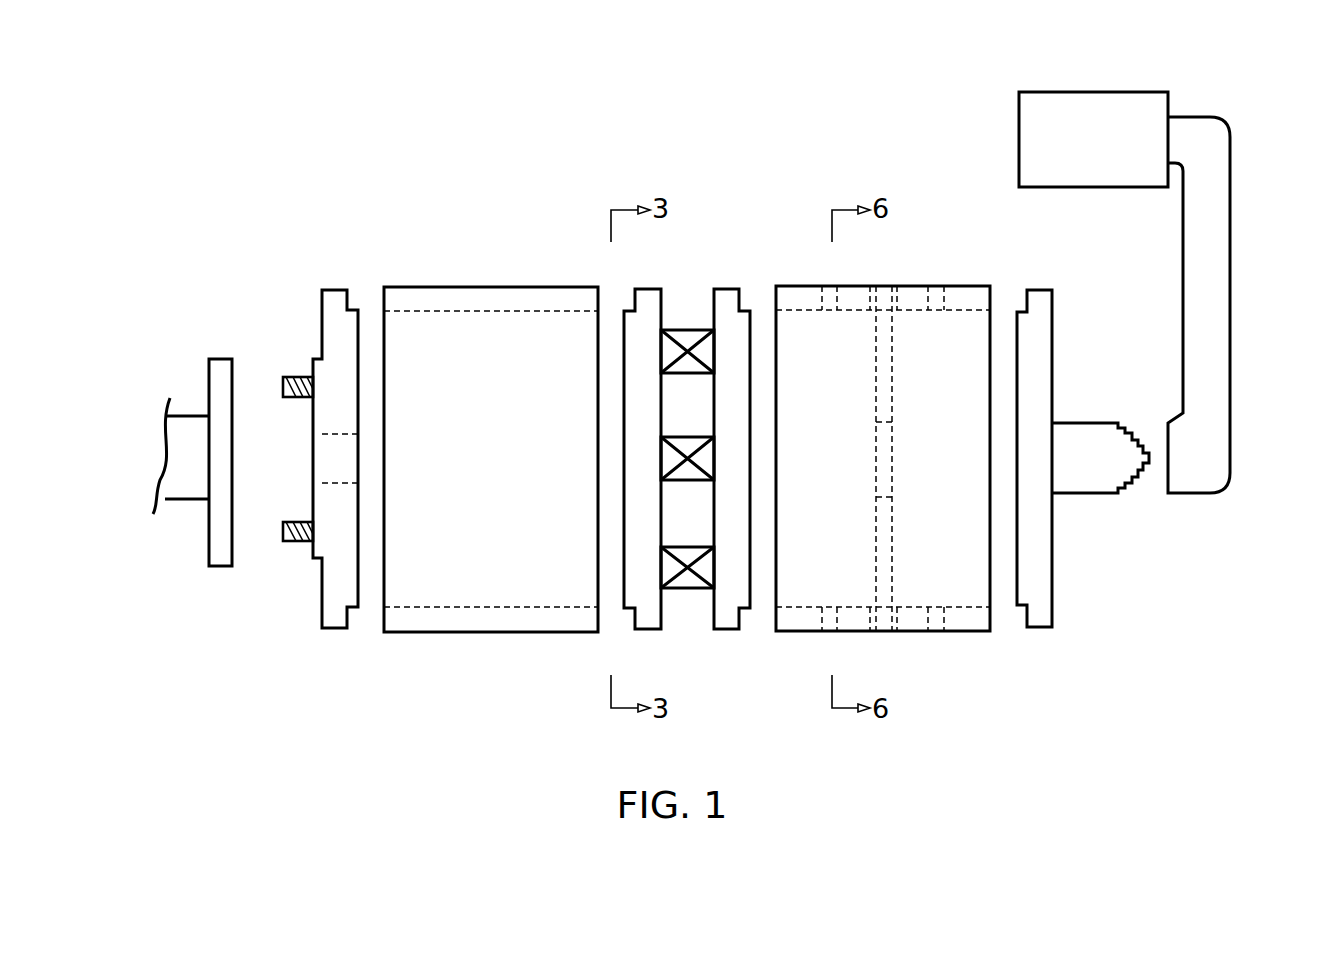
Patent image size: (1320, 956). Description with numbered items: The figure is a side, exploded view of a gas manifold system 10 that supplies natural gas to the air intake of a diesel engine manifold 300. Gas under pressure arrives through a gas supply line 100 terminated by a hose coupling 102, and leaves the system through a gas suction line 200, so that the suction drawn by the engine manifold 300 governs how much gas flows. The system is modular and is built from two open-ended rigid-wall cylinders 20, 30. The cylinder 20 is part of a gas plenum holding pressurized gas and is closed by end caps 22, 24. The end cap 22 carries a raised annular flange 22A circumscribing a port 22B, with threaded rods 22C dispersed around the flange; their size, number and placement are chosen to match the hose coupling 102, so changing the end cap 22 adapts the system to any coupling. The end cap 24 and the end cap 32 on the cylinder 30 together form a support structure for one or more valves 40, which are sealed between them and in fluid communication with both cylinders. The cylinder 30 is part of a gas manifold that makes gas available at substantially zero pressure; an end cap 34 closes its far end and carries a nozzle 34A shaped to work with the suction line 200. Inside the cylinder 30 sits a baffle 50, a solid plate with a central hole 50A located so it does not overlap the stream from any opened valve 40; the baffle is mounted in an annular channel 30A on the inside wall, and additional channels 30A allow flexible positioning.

The gas manifold system 10 is at (706, 116).
The gas supply line 100 is at (182, 400).
The hose coupling 102 is at (220, 355).
The cylinder 20 is at (495, 287).
The end cap 22 is at (332, 625).
The annular flange 22A is at (316, 443).
The port 22B is at (338, 484).
The threaded rods 22C is at (298, 375).
The end cap 24 is at (648, 632).
The cylinder 30 is at (862, 286).
The annular channel 30A is at (820, 298).
The end cap 32 is at (728, 632).
The end cap 34 is at (1043, 622).
The nozzle 34A is at (1111, 483).
The valves 40 is at (708, 436).
The baffle 50 is at (877, 555).
The hole 50A is at (883, 460).
The gas suction line 200 is at (1185, 495).
The engine manifold 300 is at (1093, 92).